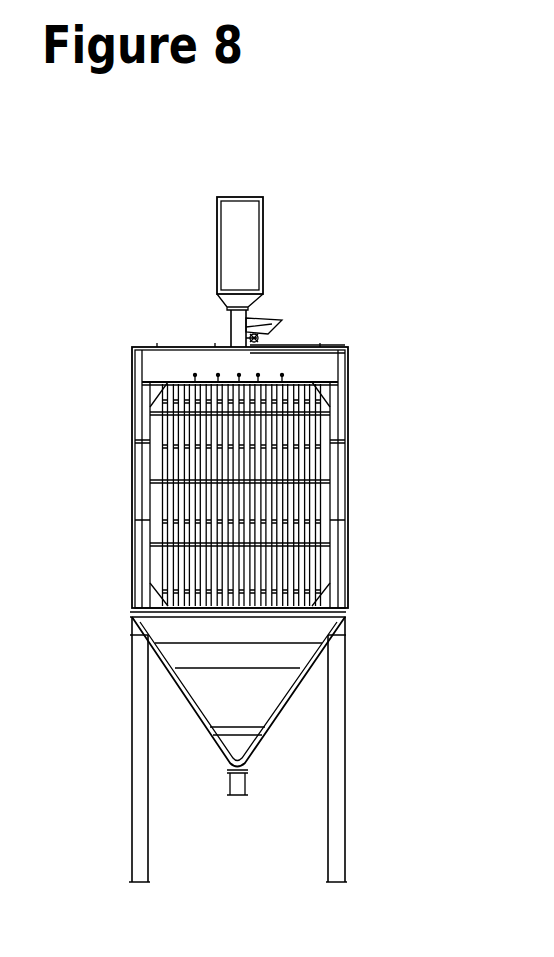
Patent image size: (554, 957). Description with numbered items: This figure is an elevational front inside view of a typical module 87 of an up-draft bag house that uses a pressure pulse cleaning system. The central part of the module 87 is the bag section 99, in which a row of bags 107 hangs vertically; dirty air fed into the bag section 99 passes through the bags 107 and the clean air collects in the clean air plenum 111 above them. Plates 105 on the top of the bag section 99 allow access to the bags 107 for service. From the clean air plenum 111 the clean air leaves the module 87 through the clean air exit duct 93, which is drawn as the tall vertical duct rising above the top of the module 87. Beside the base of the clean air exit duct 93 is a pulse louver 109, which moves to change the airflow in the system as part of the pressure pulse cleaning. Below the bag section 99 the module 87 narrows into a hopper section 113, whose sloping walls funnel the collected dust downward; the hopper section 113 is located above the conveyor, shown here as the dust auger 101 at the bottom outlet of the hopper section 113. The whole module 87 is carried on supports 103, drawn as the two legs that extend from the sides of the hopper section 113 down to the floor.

The module 87 is at (338, 171).
The clean air exit duct 93 is at (217, 228).
The pulse louver 109 is at (275, 309).
The plates 105 is at (292, 347).
The clean air plenum 111 is at (185, 355).
The bag section 99 is at (346, 497).
The bags 107 is at (320, 446).
The hopper section 113 is at (272, 700).
The dust auger 101 is at (240, 753).
The supports 103 is at (344, 790).